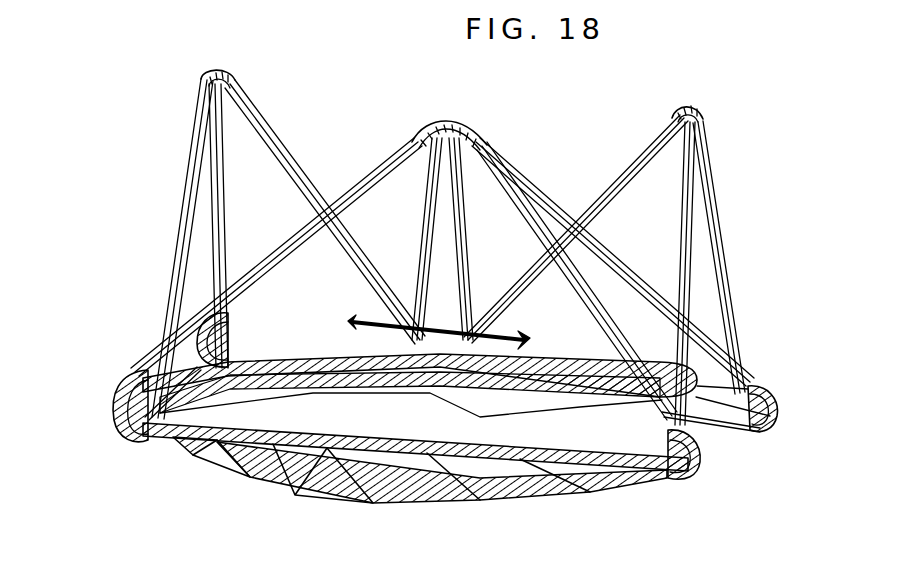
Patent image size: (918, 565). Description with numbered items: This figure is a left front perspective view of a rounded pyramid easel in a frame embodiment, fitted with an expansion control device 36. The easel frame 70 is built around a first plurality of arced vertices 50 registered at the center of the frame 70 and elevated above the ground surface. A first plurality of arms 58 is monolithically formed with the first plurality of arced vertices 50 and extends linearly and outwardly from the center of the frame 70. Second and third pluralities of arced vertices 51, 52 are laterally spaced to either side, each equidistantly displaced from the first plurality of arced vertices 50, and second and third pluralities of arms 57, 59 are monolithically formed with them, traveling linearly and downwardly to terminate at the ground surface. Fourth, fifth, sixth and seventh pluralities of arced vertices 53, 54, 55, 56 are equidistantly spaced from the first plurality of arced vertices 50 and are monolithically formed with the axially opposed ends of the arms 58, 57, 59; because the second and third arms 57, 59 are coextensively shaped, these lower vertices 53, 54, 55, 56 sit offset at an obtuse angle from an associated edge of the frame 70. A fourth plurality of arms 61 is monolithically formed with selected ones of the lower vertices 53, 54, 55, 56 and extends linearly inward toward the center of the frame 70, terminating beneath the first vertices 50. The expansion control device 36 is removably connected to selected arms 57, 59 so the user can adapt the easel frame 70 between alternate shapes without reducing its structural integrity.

The expansion control device 36 is at (522, 338).
The first plurality of arced vertices 50 is at (474, 113).
The second plurality of arced vertices 51 is at (690, 96).
The third plurality of arced vertices 52 is at (217, 58).
The fourth plurality of arced vertices 53 is at (104, 396).
The fifth plurality of arced vertices 54 is at (195, 366).
The sixth plurality of arced vertices 55 is at (796, 382).
The seventh plurality of arced vertices 56 is at (708, 472).
The second plurality of arms 57 is at (606, 198).
The first plurality of arms 58 is at (264, 263).
The third plurality of arms 59 is at (186, 215).
The fourth plurality of arms 61 is at (298, 355).
The easel frame 70 is at (345, 118).